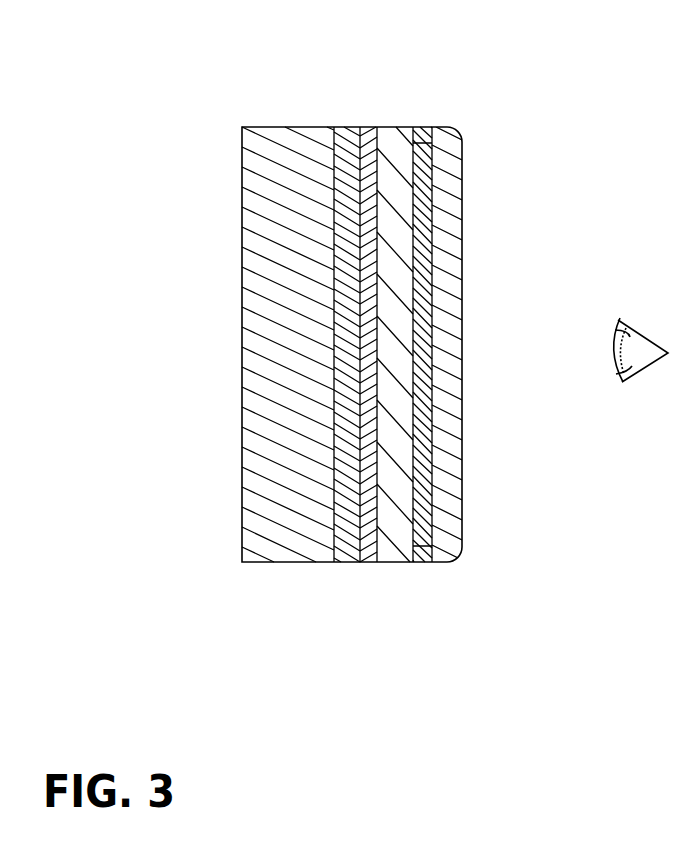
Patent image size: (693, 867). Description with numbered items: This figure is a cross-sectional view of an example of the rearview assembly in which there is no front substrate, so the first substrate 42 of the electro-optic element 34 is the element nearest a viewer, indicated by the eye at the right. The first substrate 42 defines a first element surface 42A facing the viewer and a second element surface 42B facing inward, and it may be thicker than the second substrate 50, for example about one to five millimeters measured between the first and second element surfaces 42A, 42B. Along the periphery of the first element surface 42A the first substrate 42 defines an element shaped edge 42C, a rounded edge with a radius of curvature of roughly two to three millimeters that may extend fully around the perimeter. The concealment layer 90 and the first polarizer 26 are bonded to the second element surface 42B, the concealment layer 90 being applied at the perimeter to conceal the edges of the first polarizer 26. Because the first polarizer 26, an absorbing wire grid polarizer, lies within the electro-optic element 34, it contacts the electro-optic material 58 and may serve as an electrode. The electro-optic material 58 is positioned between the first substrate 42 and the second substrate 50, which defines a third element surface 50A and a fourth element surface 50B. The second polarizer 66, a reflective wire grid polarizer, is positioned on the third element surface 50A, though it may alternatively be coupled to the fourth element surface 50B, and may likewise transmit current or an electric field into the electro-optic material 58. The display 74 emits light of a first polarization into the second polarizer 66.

The display 74 is at (264, 127).
The second substrate 50 is at (347, 137).
The third element surface 50A is at (362, 190).
The fourth element surface 50B is at (333, 276).
The first polarizer 26 is at (396, 140).
The concealment layer 90 is at (418, 141).
The first substrate 42 is at (445, 222).
The second element surface 42B is at (432, 288).
The first element surface 42A is at (464, 342).
The element shaped edge 42C is at (462, 562).
The second polarizer 66 is at (370, 545).
The electro-optic material 58 is at (395, 545).
The electro-optic element 34 is at (412, 585).